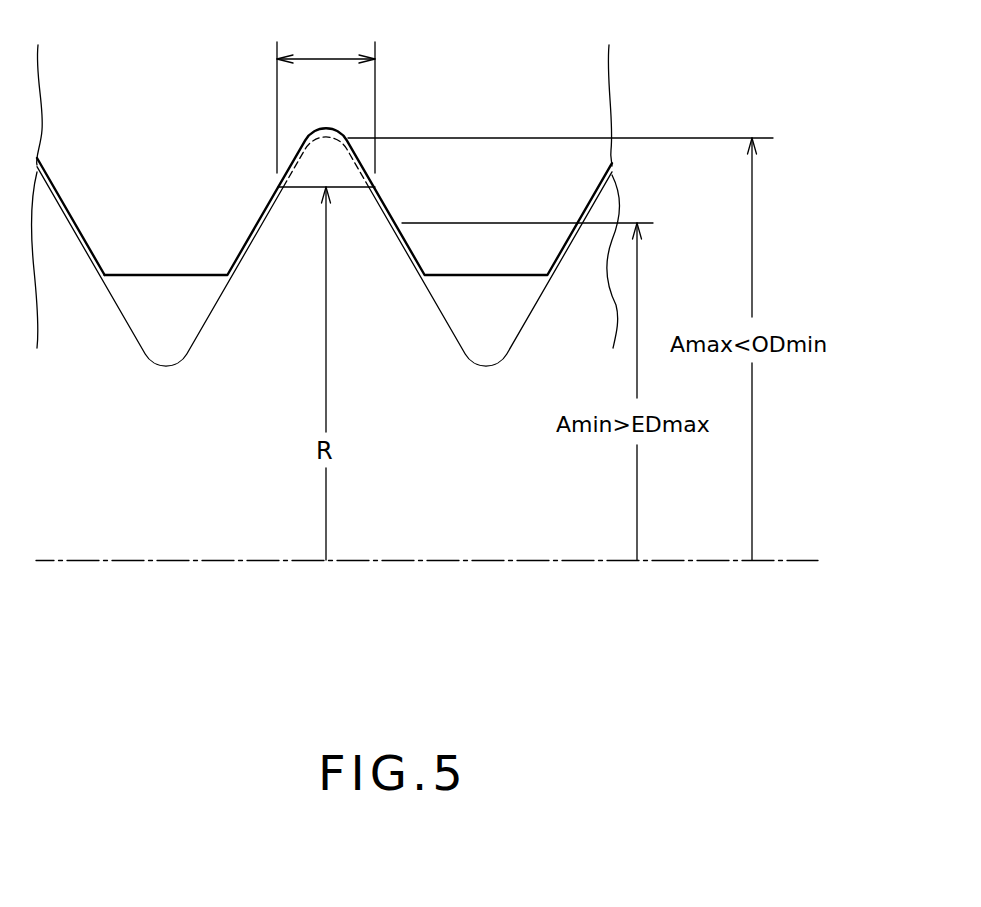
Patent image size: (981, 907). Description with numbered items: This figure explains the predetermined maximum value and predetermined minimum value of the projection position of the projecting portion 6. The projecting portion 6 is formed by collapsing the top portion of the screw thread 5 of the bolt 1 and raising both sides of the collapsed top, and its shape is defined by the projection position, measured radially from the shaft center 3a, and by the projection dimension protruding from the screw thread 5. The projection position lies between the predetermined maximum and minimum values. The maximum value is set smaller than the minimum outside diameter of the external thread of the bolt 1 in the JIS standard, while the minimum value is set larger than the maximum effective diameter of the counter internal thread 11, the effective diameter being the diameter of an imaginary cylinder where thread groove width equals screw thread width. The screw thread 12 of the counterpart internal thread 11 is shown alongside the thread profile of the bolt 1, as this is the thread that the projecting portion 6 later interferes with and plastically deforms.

The bolt 1 is at (102, 405).
The shaft center 3a is at (492, 561).
The screw thread 5 is at (268, 252).
The projecting portion 6 is at (297, 194).
The counter internal thread 11 is at (105, 140).
The screw thread 12 is at (87, 212).